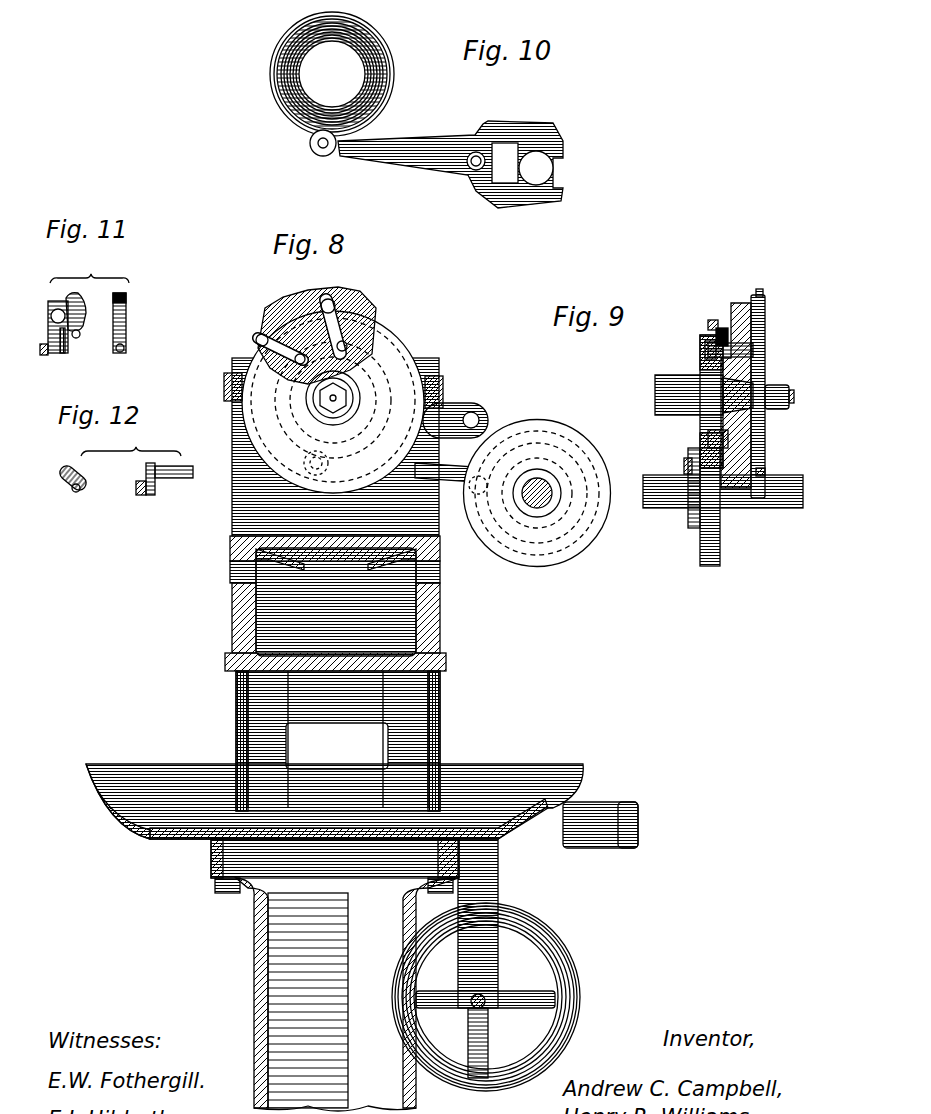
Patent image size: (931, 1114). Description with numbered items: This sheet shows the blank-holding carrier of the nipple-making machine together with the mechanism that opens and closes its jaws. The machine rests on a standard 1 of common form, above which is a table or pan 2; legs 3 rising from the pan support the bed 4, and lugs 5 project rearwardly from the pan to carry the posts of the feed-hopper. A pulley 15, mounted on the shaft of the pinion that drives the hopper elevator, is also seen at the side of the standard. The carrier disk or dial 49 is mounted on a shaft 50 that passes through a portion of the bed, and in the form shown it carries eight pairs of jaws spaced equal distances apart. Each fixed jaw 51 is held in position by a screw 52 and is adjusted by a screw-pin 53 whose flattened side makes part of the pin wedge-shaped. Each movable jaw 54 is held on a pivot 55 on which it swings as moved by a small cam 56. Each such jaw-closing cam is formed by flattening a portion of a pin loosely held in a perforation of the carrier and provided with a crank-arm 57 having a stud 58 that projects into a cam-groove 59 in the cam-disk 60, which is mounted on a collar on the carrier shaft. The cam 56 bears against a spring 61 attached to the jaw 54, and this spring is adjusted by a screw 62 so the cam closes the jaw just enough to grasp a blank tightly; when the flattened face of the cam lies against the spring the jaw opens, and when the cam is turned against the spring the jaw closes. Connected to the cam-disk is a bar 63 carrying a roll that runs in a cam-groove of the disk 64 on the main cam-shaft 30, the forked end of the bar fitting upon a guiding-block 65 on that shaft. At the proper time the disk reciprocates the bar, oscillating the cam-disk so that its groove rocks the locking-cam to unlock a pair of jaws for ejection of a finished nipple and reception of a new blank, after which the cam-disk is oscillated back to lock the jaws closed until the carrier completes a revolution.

In FIG. 8, the standard 1 is at (264, 971).
In FIG. 8, the table or pan 2 is at (128, 815).
In FIG. 8, the legs 3 is at (382, 740).
In FIG. 8, the bed 4 is at (430, 612).
In FIG. 8, the lugs 5 is at (632, 815).
In FIG. 8, the pulley 15 is at (548, 941).
In FIG. 8, the main cam-shaft 30 is at (524, 500).
In FIG. 9, the main cam-shaft 30 is at (645, 496).
In FIG. 9, the carrier disk or dial 49 is at (733, 296).
In FIG. 9, the shaft 50 is at (655, 380).
In FIG. 11, the jaws 51 is at (73, 300).
In FIG. 8, the jaws 51 is at (342, 284).
In FIG. 9, the jaws 51 is at (705, 325).
In FIG. 11, the screw 52 is at (72, 330).
In FIG. 8, the screw 52 is at (284, 310).
In FIG. 8, the screw-pin 53 is at (286, 300).
In FIG. 11, the jaws 54 is at (46, 294).
In FIG. 8, the jaws 54 is at (322, 284).
In FIG. 9, the jaws 54 is at (757, 288).
In FIG. 11, the pivot 55 is at (43, 311).
In FIG. 8, the pivot 55 is at (310, 282).
In FIG. 12, the cam 56 is at (62, 466).
In FIG. 8, the cam 56 is at (352, 346).
In FIG. 9, the cam 56 is at (724, 325).
In FIG. 12, the crank-arm 57 is at (60, 480).
In FIG. 12, the stud 58 is at (129, 484).
In FIG. 9, the stud 58 is at (700, 347).
In FIG. 10, the cam-groove 59 is at (279, 48).
In FIG. 9, the cam-groove 59 is at (700, 430).
In FIG. 10, the cam-disk 60 is at (270, 99).
In FIG. 9, the cam-disk 60 is at (692, 331).
In FIG. 11, the spring 61 is at (56, 346).
In FIG. 8, the spring 61 is at (346, 336).
In FIG. 11, the screw 62 is at (36, 348).
In FIG. 8, the screw 62 is at (300, 308).
In FIG. 10, the bar 63 is at (432, 132).
In FIG. 8, the bar 63 is at (448, 492).
In FIG. 9, the bar 63 is at (680, 522).
In FIG. 8, the disk 64 is at (590, 510).
In FIG. 9, the disk 64 is at (712, 548).
In FIG. 10, the guiding-block 65 is at (556, 147).